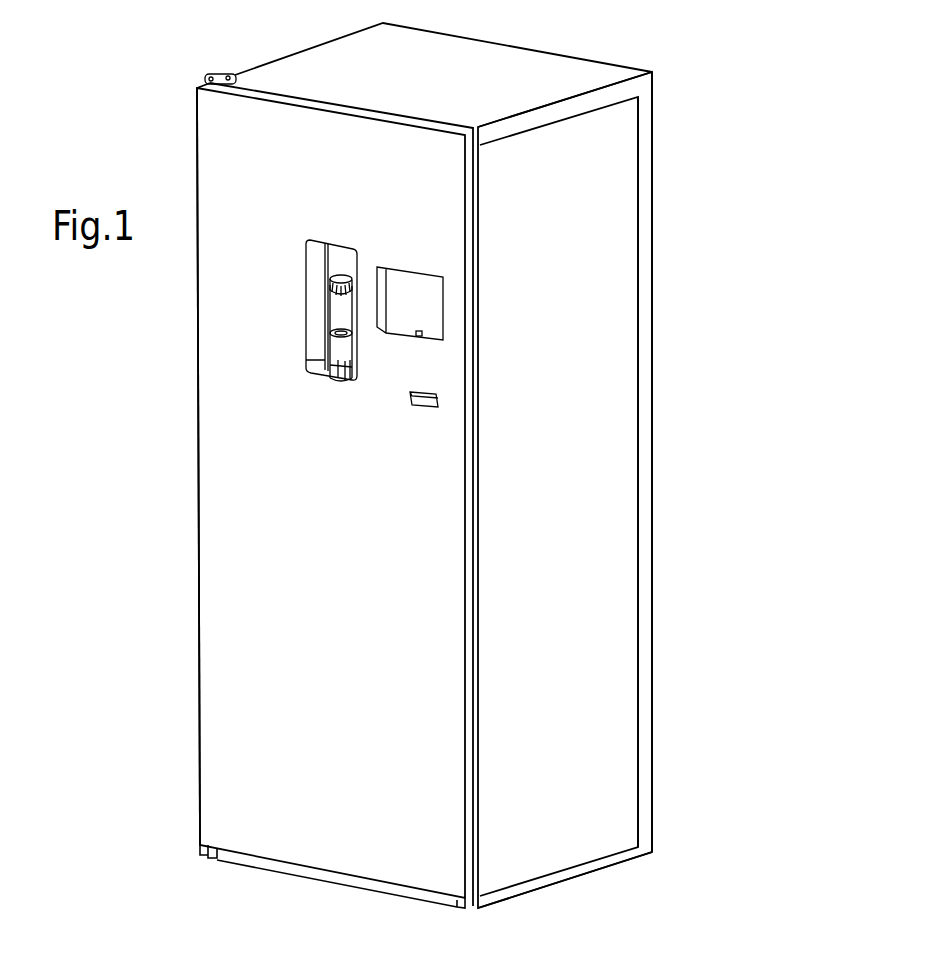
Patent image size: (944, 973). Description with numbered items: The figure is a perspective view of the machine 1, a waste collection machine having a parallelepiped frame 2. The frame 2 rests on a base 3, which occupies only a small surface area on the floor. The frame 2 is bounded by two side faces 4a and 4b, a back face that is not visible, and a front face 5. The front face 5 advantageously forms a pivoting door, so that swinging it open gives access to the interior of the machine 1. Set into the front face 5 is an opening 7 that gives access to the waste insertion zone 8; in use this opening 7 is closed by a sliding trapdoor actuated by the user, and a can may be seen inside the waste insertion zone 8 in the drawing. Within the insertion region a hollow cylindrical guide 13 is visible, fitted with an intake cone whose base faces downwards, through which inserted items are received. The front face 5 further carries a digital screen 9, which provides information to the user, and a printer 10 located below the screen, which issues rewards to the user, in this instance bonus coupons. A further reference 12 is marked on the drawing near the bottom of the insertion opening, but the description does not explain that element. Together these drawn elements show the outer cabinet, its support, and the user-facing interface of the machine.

The machine 1 is at (665, 38).
The frame 2 is at (676, 667).
The base 3 is at (588, 879).
The side face 4a is at (618, 467).
The side face 4b is at (192, 428).
The front face 5 is at (330, 552).
The opening 7 is at (320, 244).
The waste insertion zone 8 is at (296, 287).
The digital screen 9 is at (413, 268).
The printer 10 is at (418, 408).
The dispensing outlet 12 is at (322, 374).
The hollow cylindrical guide 13 is at (348, 253).